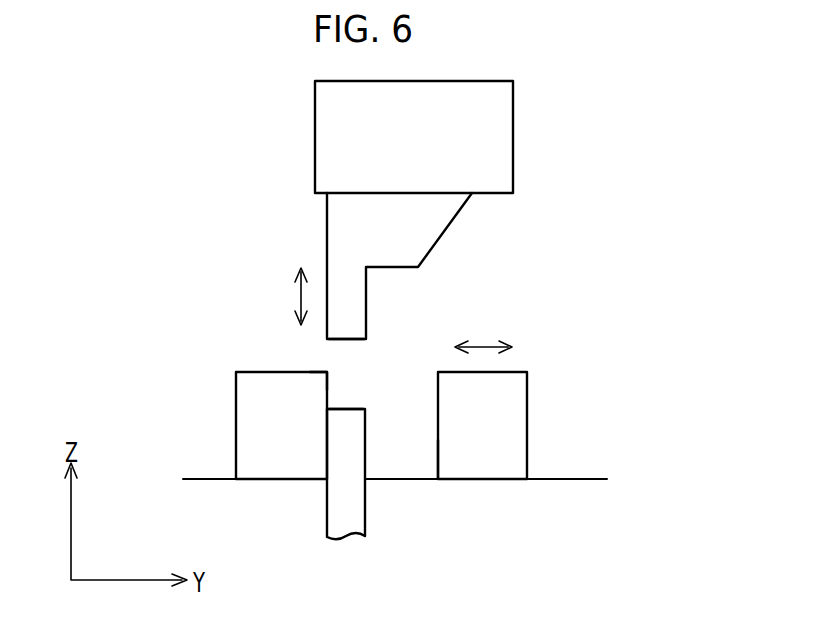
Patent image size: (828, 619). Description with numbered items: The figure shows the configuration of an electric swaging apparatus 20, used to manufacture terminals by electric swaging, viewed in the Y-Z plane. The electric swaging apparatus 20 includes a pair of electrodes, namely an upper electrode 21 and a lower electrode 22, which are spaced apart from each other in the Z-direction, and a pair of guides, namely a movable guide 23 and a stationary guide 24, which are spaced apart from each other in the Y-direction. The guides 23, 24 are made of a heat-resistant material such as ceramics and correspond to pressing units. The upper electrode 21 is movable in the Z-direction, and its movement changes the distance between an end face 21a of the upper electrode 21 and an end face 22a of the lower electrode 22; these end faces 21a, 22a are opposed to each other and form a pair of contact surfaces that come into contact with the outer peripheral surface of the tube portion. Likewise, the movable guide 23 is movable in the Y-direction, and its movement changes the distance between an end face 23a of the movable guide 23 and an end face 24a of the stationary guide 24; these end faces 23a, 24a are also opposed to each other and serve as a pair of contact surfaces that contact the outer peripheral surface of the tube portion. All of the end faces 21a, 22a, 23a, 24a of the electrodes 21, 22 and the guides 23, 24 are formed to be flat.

The electric swaging apparatus 20 is at (590, 180).
The upper electrode 21 is at (327, 232).
The end face of the upper electrode 21a is at (350, 339).
The lower electrode 22 is at (365, 515).
The end face of the lower electrode 22a is at (350, 404).
The movable guide 23 is at (527, 422).
The end face of the movable guide 23a is at (438, 461).
The stationary guide 24 is at (236, 413).
The end face of the stationary guide 24a is at (330, 386).